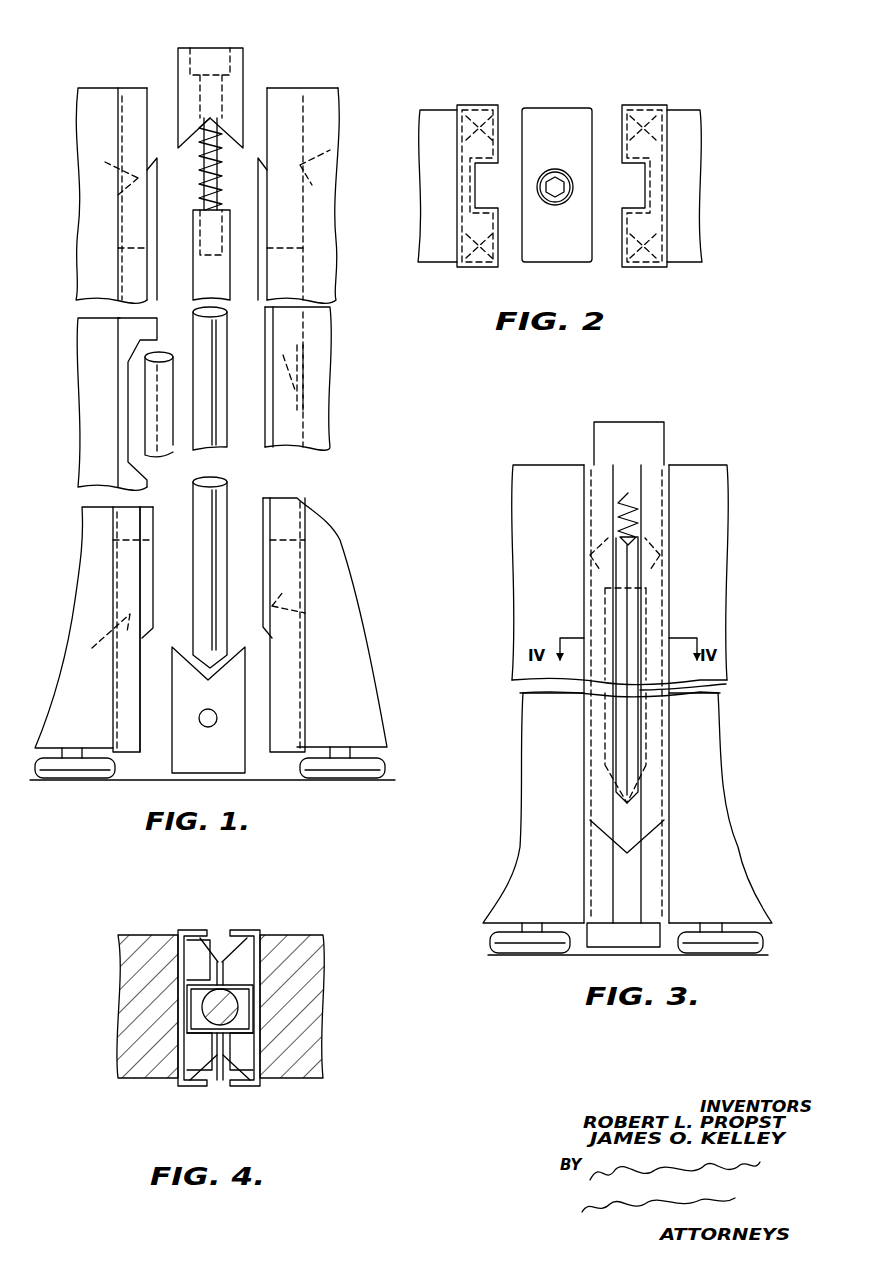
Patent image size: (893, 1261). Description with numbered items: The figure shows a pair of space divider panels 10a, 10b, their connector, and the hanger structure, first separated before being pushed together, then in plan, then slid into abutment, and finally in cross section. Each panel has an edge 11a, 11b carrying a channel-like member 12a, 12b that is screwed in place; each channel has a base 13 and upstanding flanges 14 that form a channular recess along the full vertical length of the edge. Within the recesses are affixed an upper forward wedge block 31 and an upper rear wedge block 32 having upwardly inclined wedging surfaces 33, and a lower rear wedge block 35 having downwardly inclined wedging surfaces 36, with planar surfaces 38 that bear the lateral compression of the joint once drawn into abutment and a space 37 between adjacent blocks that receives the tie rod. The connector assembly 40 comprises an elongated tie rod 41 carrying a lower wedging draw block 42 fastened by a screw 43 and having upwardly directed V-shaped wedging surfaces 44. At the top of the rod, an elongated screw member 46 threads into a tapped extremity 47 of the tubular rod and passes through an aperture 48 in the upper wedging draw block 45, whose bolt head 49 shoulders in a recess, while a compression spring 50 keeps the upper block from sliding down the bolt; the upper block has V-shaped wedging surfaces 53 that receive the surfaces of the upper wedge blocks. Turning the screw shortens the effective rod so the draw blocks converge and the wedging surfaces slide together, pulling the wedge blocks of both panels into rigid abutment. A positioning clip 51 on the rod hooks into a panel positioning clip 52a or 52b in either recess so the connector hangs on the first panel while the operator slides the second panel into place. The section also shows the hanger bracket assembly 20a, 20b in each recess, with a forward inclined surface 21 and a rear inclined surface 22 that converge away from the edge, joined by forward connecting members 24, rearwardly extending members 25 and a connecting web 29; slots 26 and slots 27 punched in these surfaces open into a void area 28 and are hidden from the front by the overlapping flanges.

In FIG. 1, the space divider panel 10a is at (66, 652).
In FIG. 2, the space divider panel 10a is at (430, 178).
In FIG. 3, the space divider panel 10a is at (513, 543).
In FIG. 4, the space divider panel 10a is at (124, 934).
In FIG. 1, the space divider panel 10b is at (76, 138).
In FIG. 2, the space divider panel 10b is at (702, 150).
In FIG. 3, the space divider panel 10b is at (728, 548).
In FIG. 4, the space divider panel 10b is at (320, 975).
In FIG. 1, the panel edge 11a is at (118, 228).
In FIG. 2, the panel edge 11a is at (462, 210).
In FIG. 3, the panel edge 11a is at (582, 849).
In FIG. 4, the panel edge 11a is at (180, 1017).
In FIG. 1, the panel edge 11b is at (305, 215).
In FIG. 3, the panel edge 11b is at (667, 870).
In FIG. 4, the panel edge 11b is at (263, 1050).
In FIG. 1, the channel-like member 12a is at (100, 88).
In FIG. 2, the channel-like member 12a is at (470, 102).
In FIG. 3, the channel-like member 12a is at (582, 512).
In FIG. 4, the channel-like member 12a is at (180, 1050).
In FIG. 1, the channel-like member 12b is at (302, 84).
In FIG. 2, the channel-like member 12b is at (670, 100).
In FIG. 3, the channel-like member 12b is at (665, 535).
In FIG. 4, the channel-like member 12b is at (262, 1064).
In FIG. 4, the base 13 is at (185, 985).
In FIG. 4, the upstanding flanges 14 is at (192, 930).
In FIG. 4, the hanger bracket assembly 20a is at (190, 985).
In FIG. 4, the hanger bracket assembly 20b is at (265, 950).
In FIG. 4, the forward inclined surface 21 is at (220, 1082).
In FIG. 4, the rear inclined surface 22 is at (220, 945).
In FIG. 4, the forward connecting members 24 is at (245, 1028).
In FIG. 4, the rearwardly extending members 25 is at (248, 1010).
In FIG. 4, the slots 26 is at (183, 1082).
In FIG. 4, the slots 27 is at (206, 938).
In FIG. 4, the void area 28 is at (220, 1005).
In FIG. 4, the connecting web 29 is at (258, 1005).
In FIG. 1, the upper forward wedge block 31 is at (157, 166).
In FIG. 2, the upper forward wedge block 31 is at (497, 264).
In FIG. 2, the upper rear wedge block 32 is at (502, 100).
In FIG. 1, the upwardly inclined wedging surfaces 33 is at (118, 166).
In FIG. 3, the upwardly inclined wedging surfaces 33 is at (590, 556).
In FIG. 1, the lower rear wedge block 35 is at (153, 606).
In FIG. 1, the downwardly inclined wedging surfaces 36 is at (320, 630).
In FIG. 2, the space 37 is at (560, 186).
In FIG. 1, the planar surfaces 38 is at (152, 248).
In FIG. 1, the connector assembly 40 is at (202, 44).
In FIG. 2, the connector assembly 40 is at (576, 102).
In FIG. 3, the connector assembly 40 is at (634, 418).
In FIG. 1, the tie rod 41 is at (216, 493).
In FIG. 3, the tie rod 41 is at (682, 648).
In FIG. 1, the lower wedging draw block 42 is at (208, 710).
In FIG. 3, the lower wedging draw block 42 is at (623, 935).
In FIG. 1, the screw 43 is at (210, 714).
In FIG. 1, the V-shaped wedging surfaces 44 is at (214, 660).
In FIG. 3, the V-shaped wedging surfaces 44 is at (617, 843).
In FIG. 1, the upper wedging draw block 45 is at (189, 94).
In FIG. 2, the upper wedging draw block 45 is at (549, 232).
In FIG. 3, the upper wedging draw block 45 is at (627, 442).
In FIG. 1, the elongated screw member 46 is at (226, 160).
In FIG. 1, the tapped extremity 47 is at (216, 250).
In FIG. 1, the aperture 48 is at (232, 88).
In FIG. 1, the bolt head 49 is at (218, 60).
In FIG. 2, the bolt head 49 is at (556, 182).
In FIG. 1, the compression spring 50 is at (223, 196).
In FIG. 1, the positioning clip 51 is at (132, 400).
In FIG. 1, the panel positioning clip 52a is at (130, 412).
In FIG. 1, the panel positioning clip 52b is at (300, 383).
In FIG. 1, the V-shaped wedging surfaces 53 is at (183, 136).